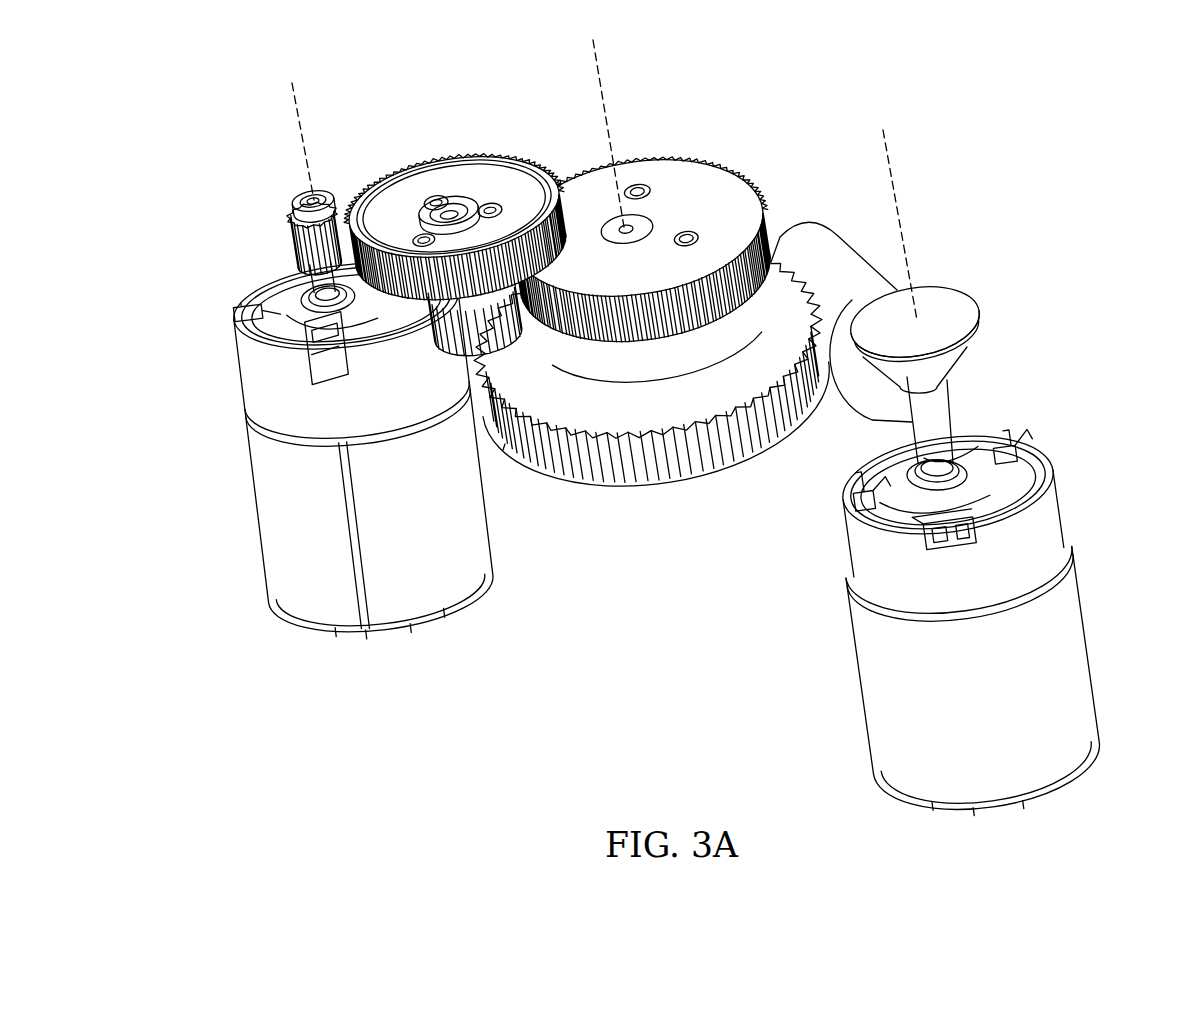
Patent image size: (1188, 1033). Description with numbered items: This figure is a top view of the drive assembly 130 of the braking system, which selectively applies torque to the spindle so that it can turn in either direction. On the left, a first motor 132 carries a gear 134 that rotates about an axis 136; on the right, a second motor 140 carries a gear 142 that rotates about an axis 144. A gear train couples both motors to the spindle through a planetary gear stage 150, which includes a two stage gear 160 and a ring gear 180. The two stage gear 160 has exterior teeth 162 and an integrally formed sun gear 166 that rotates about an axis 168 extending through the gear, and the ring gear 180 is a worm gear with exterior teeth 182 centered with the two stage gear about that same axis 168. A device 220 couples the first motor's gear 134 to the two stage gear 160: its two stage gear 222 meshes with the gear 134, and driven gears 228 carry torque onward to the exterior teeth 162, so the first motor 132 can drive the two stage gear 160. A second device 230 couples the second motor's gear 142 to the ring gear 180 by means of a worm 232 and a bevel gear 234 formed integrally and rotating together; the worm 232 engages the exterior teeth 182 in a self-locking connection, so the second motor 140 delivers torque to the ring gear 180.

The drive assembly 130 is at (1082, 112).
The first motor 132 is at (272, 543).
The gear 134 is at (290, 240).
The axis 136 is at (292, 126).
The second motor 140 is at (1075, 645).
The gear 142 is at (970, 313).
The axis 144 is at (913, 280).
The planetary gear stage 150 is at (748, 490).
The two stage gear 160 is at (676, 151).
The exterior teeth 162 is at (772, 224).
The sun gear 166 is at (612, 226).
The axis 168 is at (597, 100).
The ring gear 180 is at (630, 497).
The exterior teeth 182 is at (770, 430).
The device 220 is at (400, 150).
The two stage gear 222 is at (471, 140).
The gears 228 is at (505, 450).
The device 230 is at (905, 252).
The worm 232 is at (838, 237).
The bevel gear 234 is at (950, 370).